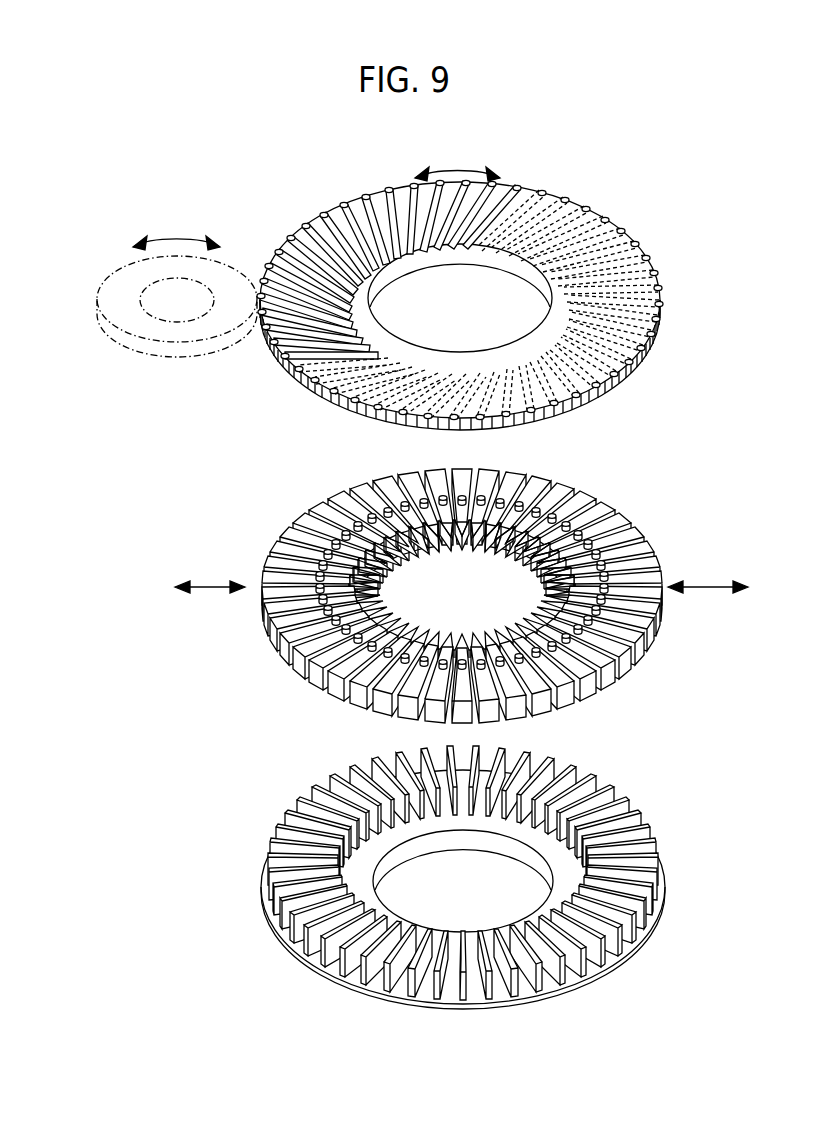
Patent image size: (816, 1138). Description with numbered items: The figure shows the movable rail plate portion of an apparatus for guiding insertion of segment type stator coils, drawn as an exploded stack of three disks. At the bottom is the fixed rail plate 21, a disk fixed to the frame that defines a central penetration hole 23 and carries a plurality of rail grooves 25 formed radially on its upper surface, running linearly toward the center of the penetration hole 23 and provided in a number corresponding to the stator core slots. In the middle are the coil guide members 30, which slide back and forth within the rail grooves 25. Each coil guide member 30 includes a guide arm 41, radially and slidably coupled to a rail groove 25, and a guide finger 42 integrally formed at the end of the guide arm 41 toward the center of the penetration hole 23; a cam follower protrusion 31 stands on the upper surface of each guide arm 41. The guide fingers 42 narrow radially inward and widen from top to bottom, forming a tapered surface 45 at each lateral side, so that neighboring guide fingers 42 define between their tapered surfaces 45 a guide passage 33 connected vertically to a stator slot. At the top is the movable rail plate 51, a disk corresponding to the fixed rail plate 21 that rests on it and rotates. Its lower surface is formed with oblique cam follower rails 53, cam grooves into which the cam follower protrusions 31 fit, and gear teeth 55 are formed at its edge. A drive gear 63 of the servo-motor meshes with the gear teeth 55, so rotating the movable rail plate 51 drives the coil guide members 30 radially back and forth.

The fixed rail plate 21 is at (463, 899).
The penetration hole 23 is at (500, 845).
The rail grooves 25 is at (462, 990).
The coil guide members 30 is at (461, 580).
The cam follower protrusion 31 is at (483, 580).
The guide passage 33 is at (376, 530).
The guide arm 41 is at (483, 548).
The guide finger 42 is at (535, 530).
The tapered surface 45 is at (512, 560).
The movable rail plate 51 is at (484, 298).
The cam follower rails 53 is at (648, 255).
The gear teeth 55 is at (640, 360).
The drive gear 63 is at (148, 352).